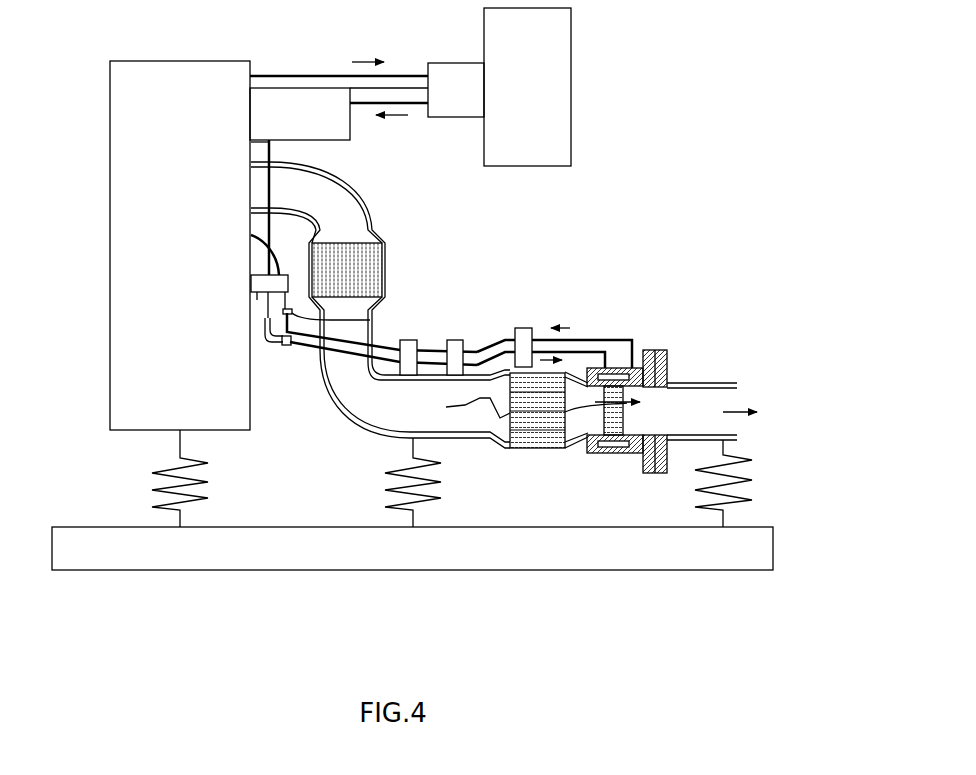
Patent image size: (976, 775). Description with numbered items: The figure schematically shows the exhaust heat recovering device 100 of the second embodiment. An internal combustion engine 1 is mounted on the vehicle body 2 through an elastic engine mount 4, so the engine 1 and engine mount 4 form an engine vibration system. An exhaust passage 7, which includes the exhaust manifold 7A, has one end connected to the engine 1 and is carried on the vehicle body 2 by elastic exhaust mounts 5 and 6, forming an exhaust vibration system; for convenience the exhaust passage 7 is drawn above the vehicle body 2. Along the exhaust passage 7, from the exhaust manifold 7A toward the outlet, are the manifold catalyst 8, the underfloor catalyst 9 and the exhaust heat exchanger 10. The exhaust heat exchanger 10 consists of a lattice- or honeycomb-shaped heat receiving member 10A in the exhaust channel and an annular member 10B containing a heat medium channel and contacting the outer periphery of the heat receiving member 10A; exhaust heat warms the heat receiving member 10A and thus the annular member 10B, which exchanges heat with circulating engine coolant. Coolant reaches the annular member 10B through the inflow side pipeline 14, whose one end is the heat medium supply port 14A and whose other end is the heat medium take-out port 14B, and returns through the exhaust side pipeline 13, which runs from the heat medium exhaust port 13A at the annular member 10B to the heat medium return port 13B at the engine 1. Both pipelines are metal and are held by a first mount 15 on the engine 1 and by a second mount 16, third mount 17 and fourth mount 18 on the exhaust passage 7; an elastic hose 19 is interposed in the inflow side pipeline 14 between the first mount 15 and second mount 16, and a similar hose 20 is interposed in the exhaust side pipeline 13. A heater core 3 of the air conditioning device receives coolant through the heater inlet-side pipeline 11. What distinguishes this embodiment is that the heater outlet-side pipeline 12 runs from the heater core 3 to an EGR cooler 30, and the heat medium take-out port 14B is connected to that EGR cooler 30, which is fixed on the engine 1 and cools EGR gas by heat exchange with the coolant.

The internal combustion engine 1 is at (179, 72).
The vehicle body 2 is at (565, 30).
The heater core 3 is at (451, 62).
The engine mount 4 is at (180, 447).
The exhaust mount 5 is at (413, 450).
The exhaust mount 6 is at (723, 454).
The exhaust passage 7 is at (353, 427).
The exhaust manifold 7A is at (373, 209).
The manifold catalyst 8 is at (386, 262).
The underfloor catalyst 9 is at (539, 450).
The exhaust heat exchanger 10 is at (632, 474).
The heat receiving member 10A is at (623, 423).
The annular member 10B is at (598, 455).
The heater inlet-side pipeline 11 is at (318, 74).
The heater outlet-side pipeline 12 is at (421, 106).
The exhaust side pipeline 13 is at (581, 338).
The heat medium exhaust port 13A is at (630, 367).
The heat medium return port 13B is at (251, 235).
The inflow side pipeline 14 is at (308, 346).
The heat medium supply port 14A is at (607, 368).
The heat medium take-out port 14B is at (270, 142).
The first mount 15 is at (257, 293).
The second mount 16 is at (417, 338).
The third mount 17 is at (456, 338).
The fourth mount 18 is at (523, 328).
The hose 19 is at (284, 346).
The hose 20 is at (370, 320).
The EGR cooler 30 is at (350, 132).
The exhaust heat recovering device 100 is at (612, 324).